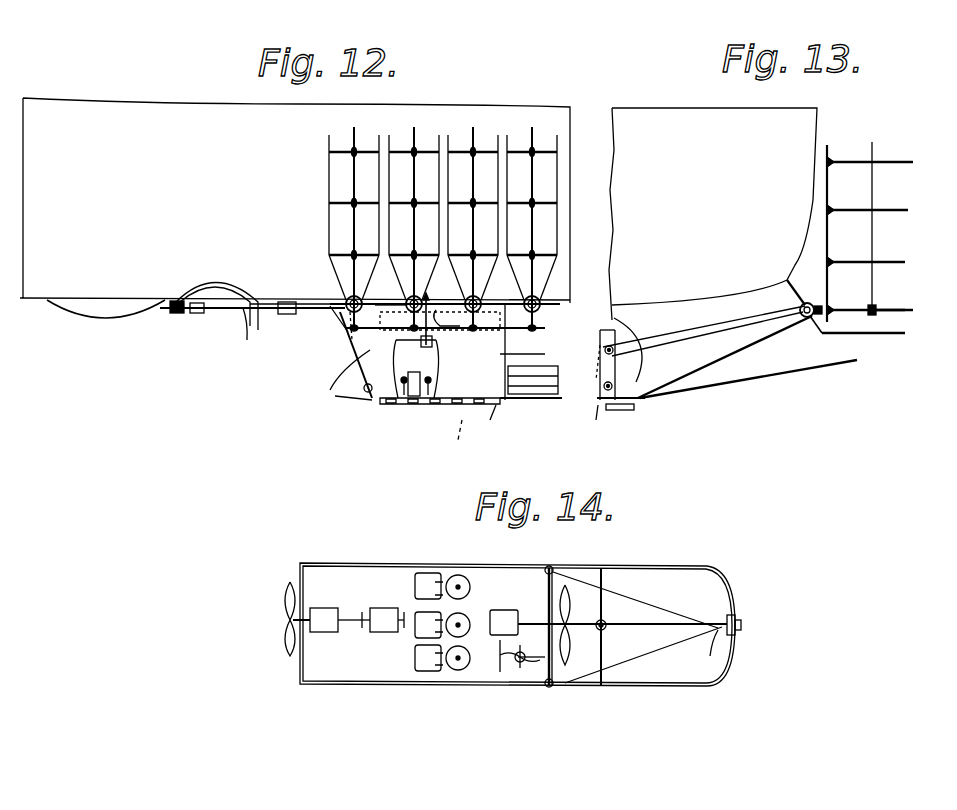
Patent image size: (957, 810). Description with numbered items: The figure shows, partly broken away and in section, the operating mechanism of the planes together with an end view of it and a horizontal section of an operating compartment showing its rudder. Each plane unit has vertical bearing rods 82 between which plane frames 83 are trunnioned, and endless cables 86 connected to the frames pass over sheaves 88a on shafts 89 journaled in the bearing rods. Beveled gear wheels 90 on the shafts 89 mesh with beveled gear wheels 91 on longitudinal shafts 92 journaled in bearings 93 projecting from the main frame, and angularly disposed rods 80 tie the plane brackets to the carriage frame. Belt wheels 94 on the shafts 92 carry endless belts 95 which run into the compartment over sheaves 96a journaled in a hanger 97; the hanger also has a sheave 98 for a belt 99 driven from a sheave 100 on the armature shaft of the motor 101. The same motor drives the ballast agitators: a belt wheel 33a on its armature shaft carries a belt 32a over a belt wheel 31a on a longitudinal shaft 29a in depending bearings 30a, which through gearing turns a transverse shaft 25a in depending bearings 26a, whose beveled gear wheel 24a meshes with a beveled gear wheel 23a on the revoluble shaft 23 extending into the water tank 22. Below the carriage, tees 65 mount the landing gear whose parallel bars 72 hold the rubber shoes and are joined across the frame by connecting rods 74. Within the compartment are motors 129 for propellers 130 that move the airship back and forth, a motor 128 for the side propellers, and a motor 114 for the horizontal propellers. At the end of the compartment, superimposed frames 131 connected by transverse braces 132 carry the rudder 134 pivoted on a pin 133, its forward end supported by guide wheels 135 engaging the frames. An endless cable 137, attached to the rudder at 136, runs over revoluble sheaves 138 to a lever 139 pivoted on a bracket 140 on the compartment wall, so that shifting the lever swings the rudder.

In FIG. 12, the water tank 22 is at (108, 316).
In FIG. 12, the revoluble shaft 23 is at (166, 310).
In FIG. 12, the beveled gear wheel 23a is at (195, 313).
In FIG. 12, the beveled gear wheel 24a is at (235, 318).
In FIG. 12, the shaft 25a is at (246, 318).
In FIG. 12, the depending bearings 26a is at (292, 318).
In FIG. 12, the longitudinal shaft 29a is at (315, 312).
In FIG. 12, the depending bearings 30a is at (284, 316).
In FIG. 12, the belt wheel 31a is at (352, 340).
In FIG. 12, the belt 32a is at (350, 345).
In FIG. 12, the belt wheel 33a is at (372, 402).
In FIG. 14, the belt wheel 33a is at (364, 628).
In FIG. 12, the vertical bearing rods 82 is at (330, 168).
In FIG. 13, the vertical bearing rods 82 is at (829, 188).
In FIG. 12, the plane frames 83 is at (330, 218).
In FIG. 13, the plane frames 83 is at (893, 212).
In FIG. 12, the endless cables 86 is at (330, 190).
In FIG. 13, the endless cables 86 is at (874, 194).
In FIG. 12, the belt wheels 94 is at (436, 311).
In FIG. 12, the endless belts 95 is at (440, 330).
In FIG. 13, the endless belts 95 is at (705, 308).
In FIG. 12, the hanger 97 is at (438, 300).
In FIG. 13, the hanger 97 is at (657, 318).
In FIG. 12, the sheave 98 is at (364, 392).
In FIG. 12, the belt 99 is at (436, 350).
In FIG. 13, the belt 99 is at (712, 355).
In FIG. 12, the sheave 100 is at (432, 384).
In FIG. 13, the sheave 100 is at (598, 410).
In FIG. 14, the sheave 100 is at (428, 632).
In FIG. 12, the motor 101 is at (414, 405).
In FIG. 13, the motor 101 is at (620, 414).
In FIG. 14, the motor 101 is at (383, 630).
In FIG. 12, the parallel bars 72 is at (486, 406).
In FIG. 13, the parallel bars 72 is at (636, 408).
In FIG. 12, the angularly disposed rods 80 is at (530, 354).
In FIG. 13, the angularly disposed rods 80 is at (785, 378).
In FIG. 12, the propellers 130 is at (328, 396).
In FIG. 14, the propellers 130 is at (286, 640).
In FIG. 12, the super-imposed frames 131 is at (541, 398).
In FIG. 14, the super-imposed frames 131 is at (658, 568).
In FIG. 12, the pin 133 is at (522, 408).
In FIG. 14, the pin 133 is at (605, 620).
In FIG. 12, the rudder 134 is at (551, 404).
In FIG. 14, the rudder 134 is at (728, 626).
In FIG. 12, the cable attachment 136 is at (494, 425).
In FIG. 14, the cable attachment 136 is at (722, 660).
In FIG. 12, the endless cable 137 is at (528, 350).
In FIG. 14, the endless cable 137 is at (662, 652).
In FIG. 12, the lever 139 is at (465, 442).
In FIG. 14, the lever 139 is at (520, 690).
In FIG. 13, the beveled gear wheels 91 is at (810, 300).
In FIG. 13, the bearings 93 is at (800, 308).
In FIG. 13, the beveled gear wheels 90 is at (824, 308).
In FIG. 13, the sheaves 88a is at (876, 308).
In FIG. 13, the shafts 89 is at (895, 310).
In FIG. 13, the longitudinal shafts 92 is at (806, 318).
In FIG. 13, the tees 65 is at (642, 364).
In FIG. 13, the connecting rods 74 is at (610, 410).
In FIG. 13, the sheaves 96a is at (596, 350).
In FIG. 14, the motor 114 is at (470, 762).
In FIG. 14, the motor 128 is at (428, 586).
In FIG. 14, the motors 129 is at (290, 618).
In FIG. 14, the transverse braces 132 is at (598, 652).
In FIG. 14, the guide wheels 135 is at (741, 622).
In FIG. 14, the revoluble sheaves 138 is at (548, 688).
In FIG. 14, the bracket 140 is at (515, 698).